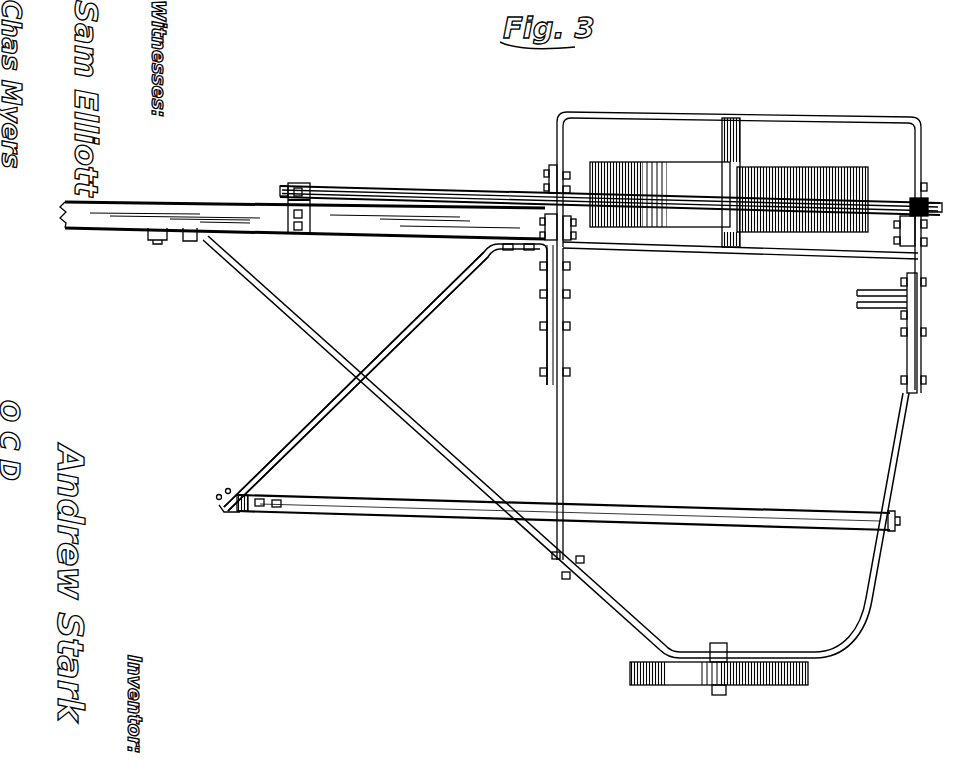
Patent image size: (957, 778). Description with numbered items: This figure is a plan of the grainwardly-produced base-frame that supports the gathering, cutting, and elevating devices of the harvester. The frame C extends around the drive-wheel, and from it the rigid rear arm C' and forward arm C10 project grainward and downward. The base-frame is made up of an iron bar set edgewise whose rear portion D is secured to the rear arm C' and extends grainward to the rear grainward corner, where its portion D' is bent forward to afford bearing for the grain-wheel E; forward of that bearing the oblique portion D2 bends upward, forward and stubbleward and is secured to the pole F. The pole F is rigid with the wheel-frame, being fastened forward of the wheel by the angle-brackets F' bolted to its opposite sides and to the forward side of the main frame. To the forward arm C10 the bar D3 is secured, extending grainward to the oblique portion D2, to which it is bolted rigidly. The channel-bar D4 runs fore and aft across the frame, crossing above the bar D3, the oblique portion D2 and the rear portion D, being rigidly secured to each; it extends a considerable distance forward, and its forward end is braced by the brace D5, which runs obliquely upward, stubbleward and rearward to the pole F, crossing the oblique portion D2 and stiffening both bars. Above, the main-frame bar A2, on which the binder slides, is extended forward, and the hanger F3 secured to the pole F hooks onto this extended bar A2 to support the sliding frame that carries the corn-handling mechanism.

The frame C is at (742, 242).
The rear arm C' is at (903, 333).
The forward arm C10 is at (553, 338).
The pole F is at (302, 239).
The angle-bracket F' is at (400, 333).
The hanger F3 is at (320, 168).
The bar A2 is at (410, 186).
The rear portion of frame-bar D is at (871, 525).
The forward-bent portion of frame-bar D' is at (737, 646).
The oblique portion of frame-bar D2 is at (445, 447).
The bar D3 is at (563, 440).
The channel-bar D4 is at (694, 508).
The brace D5 is at (398, 338).
The grain-wheel E is at (770, 687).